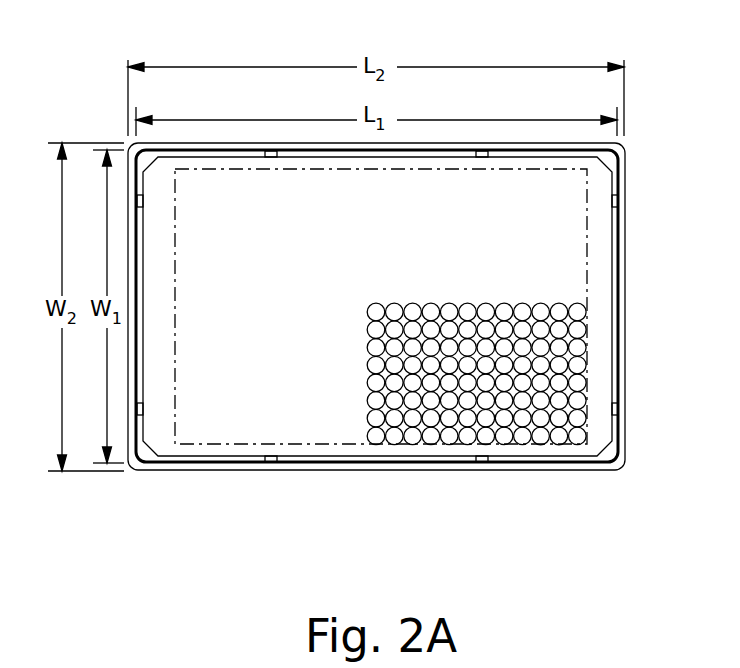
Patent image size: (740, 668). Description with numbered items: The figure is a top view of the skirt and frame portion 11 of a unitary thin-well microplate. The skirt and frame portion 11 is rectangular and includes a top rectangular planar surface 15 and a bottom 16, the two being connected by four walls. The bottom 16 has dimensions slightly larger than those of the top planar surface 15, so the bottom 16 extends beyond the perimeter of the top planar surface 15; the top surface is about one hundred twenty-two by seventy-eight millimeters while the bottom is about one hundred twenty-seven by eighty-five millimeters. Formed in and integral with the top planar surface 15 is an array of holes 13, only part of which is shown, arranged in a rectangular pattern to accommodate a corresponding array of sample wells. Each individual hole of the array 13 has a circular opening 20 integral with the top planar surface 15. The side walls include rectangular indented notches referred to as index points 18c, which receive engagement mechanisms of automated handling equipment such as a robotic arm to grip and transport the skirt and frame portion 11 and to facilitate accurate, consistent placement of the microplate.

The skirt and frame portion 11 is at (96, 108).
The array of holes 13 is at (583, 373).
The top rectangular planar surface 15 is at (195, 450).
The bottom 16 is at (142, 462).
The index points 18c is at (480, 463).
The circular opening 20 is at (560, 440).